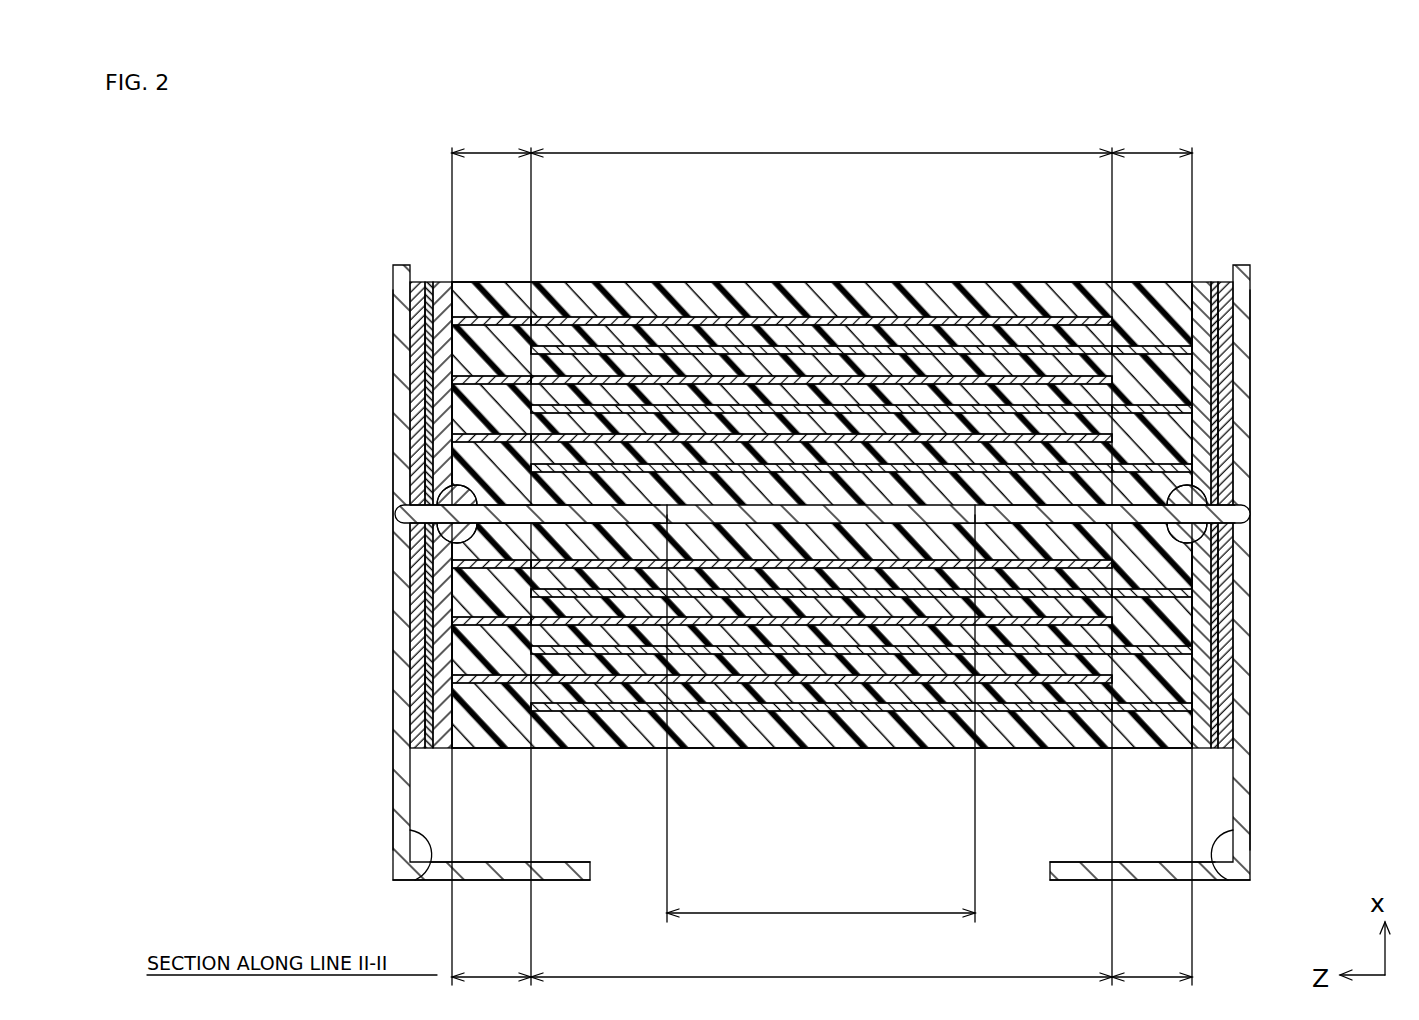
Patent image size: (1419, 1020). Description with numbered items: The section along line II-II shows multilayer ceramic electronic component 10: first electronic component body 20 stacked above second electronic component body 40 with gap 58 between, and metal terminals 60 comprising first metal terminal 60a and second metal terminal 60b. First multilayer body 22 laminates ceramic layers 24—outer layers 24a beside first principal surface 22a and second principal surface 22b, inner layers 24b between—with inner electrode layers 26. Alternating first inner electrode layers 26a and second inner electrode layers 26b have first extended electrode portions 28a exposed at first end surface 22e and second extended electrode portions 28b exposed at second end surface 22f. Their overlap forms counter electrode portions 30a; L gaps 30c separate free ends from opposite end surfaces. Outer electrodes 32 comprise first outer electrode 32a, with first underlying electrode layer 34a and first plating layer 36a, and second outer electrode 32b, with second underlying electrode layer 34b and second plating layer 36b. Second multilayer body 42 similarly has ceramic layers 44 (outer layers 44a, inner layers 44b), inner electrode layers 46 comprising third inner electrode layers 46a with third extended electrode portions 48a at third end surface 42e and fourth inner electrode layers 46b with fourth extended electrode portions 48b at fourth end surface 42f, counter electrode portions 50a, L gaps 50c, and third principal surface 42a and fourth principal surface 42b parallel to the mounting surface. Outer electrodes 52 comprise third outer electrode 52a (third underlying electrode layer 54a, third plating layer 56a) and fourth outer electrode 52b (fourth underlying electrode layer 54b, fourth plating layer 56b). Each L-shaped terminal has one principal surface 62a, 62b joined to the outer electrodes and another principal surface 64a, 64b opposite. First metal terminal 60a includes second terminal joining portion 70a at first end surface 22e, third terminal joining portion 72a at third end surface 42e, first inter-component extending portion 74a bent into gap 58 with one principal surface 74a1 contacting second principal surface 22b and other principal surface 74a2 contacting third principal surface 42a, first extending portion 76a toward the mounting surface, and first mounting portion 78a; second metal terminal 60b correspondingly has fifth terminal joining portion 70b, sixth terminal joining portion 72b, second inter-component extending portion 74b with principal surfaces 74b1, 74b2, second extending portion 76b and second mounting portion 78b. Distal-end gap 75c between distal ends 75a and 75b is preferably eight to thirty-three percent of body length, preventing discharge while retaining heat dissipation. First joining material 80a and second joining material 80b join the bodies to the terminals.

The multilayer ceramic electronic component 10 is at (306, 208).
The first electronic component body 20 is at (688, 262).
The first multilayer body 22 is at (730, 280).
The first principal surface 22a is at (1080, 280).
The second principal surface 22b is at (780, 750).
The first end surface 22e is at (450, 400).
The second end surface 22f is at (1194, 362).
The ceramic layers 24 is at (152, 310).
The outer layers 24a is at (950, 470).
The inner layers 24b is at (915, 352).
The inner electrode layers 26 is at (152, 403).
The first inner electrode layers 26a is at (580, 378).
The second inner electrode layers 26b is at (758, 345).
The first extended electrode portion 28a is at (424, 358).
The second extended electrode portion 28b is at (1220, 400).
The counter electrode portions 30a is at (821, 139).
The end portions (L gaps) 30c is at (822, 139).
The external electrodes of first capacitor 32 is at (152, 500).
The first outer electrode 32a is at (312, 258).
The second outer electrode 32b is at (1335, 258).
The first underlying electrode layer 34a is at (440, 296).
The second underlying electrode layer 34b is at (1205, 298).
The first plating layer 36a is at (428, 318).
The second plating layer 36b is at (1215, 318).
The second electronic component body 40 is at (863, 767).
The second multilayer body 42 is at (887, 755).
The third principal surface 42a is at (865, 525).
The fourth principal surface 42b is at (570, 750).
The third end surface 42e is at (450, 725).
The fourth end surface 42f is at (1194, 725).
The ceramic layers 44 is at (152, 610).
The outer layers 44a is at (1040, 640).
The inner layers 44b is at (942, 700).
The inner electrode layers 46 is at (152, 708).
The third inner electrode layers 46a is at (632, 705).
The fourth inner electrode layers 46b is at (712, 730).
The third extended electrode portion 48a is at (424, 690).
The fourth extended electrode portion 48b is at (1220, 690).
The counter electrode portions 50a is at (821, 960).
The end portions (L gaps) 50c is at (822, 960).
The external electrodes of second capacitor 52 is at (152, 805).
The third outer electrode 52a is at (312, 545).
The fourth outer electrode 52b is at (1335, 545).
The third underlying electrode layer 54a is at (440, 585).
The fourth underlying electrode layer 54b is at (1205, 585).
The third plating layer 56a is at (428, 600).
The fourth plating layer 56b is at (1215, 600).
The gap 58 is at (822, 750).
The metal terminals 60 is at (152, 927).
The first metal terminal 60a is at (396, 262).
The second metal terminal 60b is at (1246, 262).
The one principal surface 62a is at (415, 880).
The one principal surface 62b is at (1228, 880).
The another principal surface 64a is at (410, 838).
The another principal surface 64b is at (1235, 838).
The second terminal joining portion 70a is at (397, 430).
The fifth terminal joining portion 70b is at (1248, 430).
The third terminal joining portion 72a is at (420, 648).
The sixth terminal joining portion 72b is at (1225, 648).
The first inter-component extending portion 74a is at (515, 512).
The one principal surface 74a1 is at (440, 504).
The another principal surface 74a2 is at (445, 527).
The second inter-component extending portion 74b is at (1130, 480).
The one principal surface 74b1 is at (1205, 504).
The another principal surface 74b2 is at (1200, 527).
The distal end 75a is at (668, 510).
The distal end 75b is at (976, 508).
The distal-end gap 75c is at (821, 718).
The first extending portion 76a is at (394, 800).
The second extending portion 76b is at (1249, 800).
The first mounting portion 78a is at (485, 862).
The second mounting portion 78b is at (1080, 862).
The first joining material 80a is at (420, 300).
The second joining material 80b is at (1222, 300).